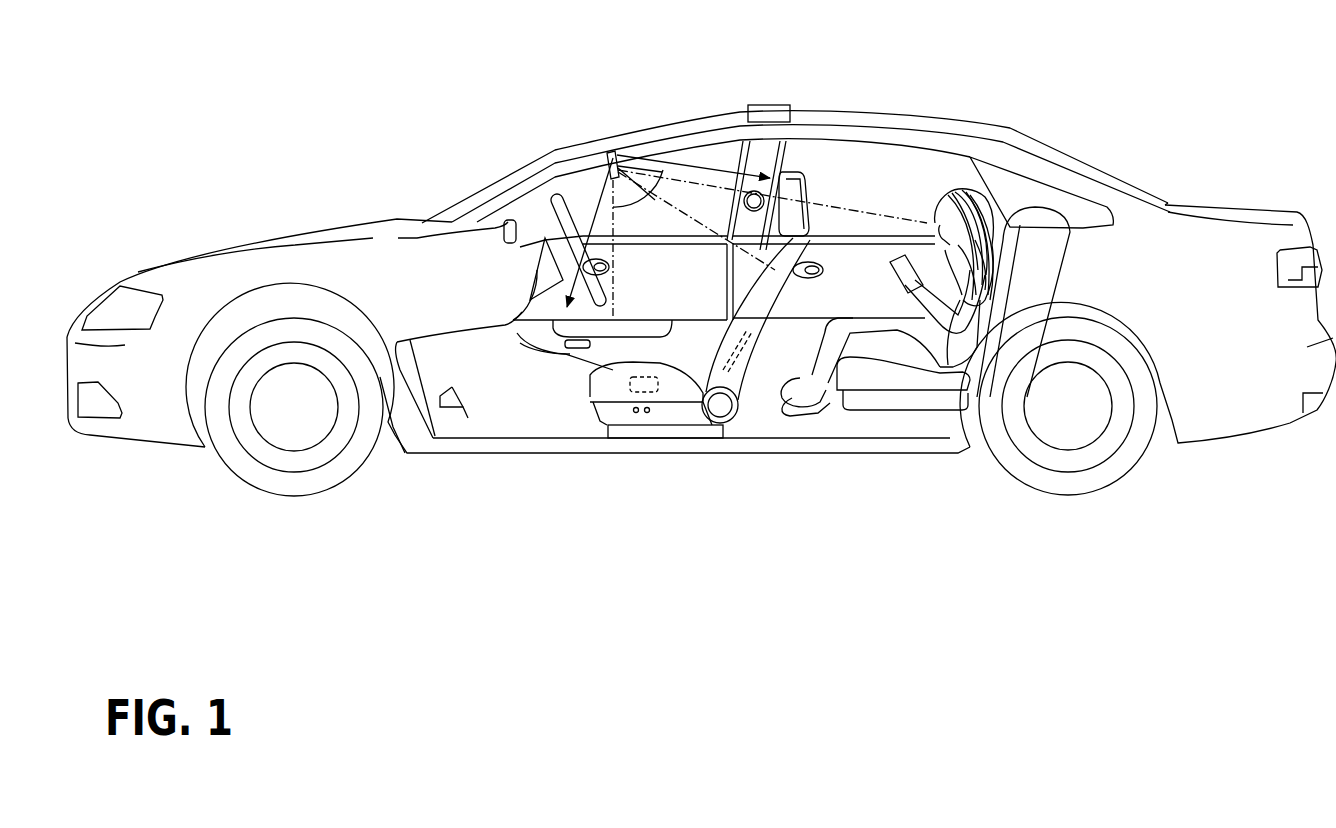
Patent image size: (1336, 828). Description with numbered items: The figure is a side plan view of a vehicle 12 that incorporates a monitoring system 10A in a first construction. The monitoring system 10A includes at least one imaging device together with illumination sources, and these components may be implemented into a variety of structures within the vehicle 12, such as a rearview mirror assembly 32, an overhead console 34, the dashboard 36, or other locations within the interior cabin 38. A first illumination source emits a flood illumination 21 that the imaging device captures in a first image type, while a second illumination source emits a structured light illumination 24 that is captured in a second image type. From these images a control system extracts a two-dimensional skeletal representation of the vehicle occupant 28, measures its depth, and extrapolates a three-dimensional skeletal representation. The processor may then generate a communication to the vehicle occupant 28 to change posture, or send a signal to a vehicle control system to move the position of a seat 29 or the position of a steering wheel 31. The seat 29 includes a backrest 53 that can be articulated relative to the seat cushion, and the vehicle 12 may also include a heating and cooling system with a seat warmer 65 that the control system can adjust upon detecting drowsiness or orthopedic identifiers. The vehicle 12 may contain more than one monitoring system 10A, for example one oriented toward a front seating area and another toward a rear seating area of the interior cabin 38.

The monitoring system 10A is at (771, 100).
The vehicle 12 is at (1010, 123).
The flood illumination 21 is at (618, 152).
The structured light illumination 24 is at (895, 215).
The vehicle occupant 28 is at (950, 187).
The seat 29 is at (680, 327).
The steering wheel 31 is at (537, 263).
The rearview mirror assembly 32 is at (585, 155).
The overhead console 34 is at (700, 152).
The dashboard 36 is at (534, 260).
The interior cabin 38 is at (915, 170).
The backrest 53 is at (1007, 227).
The seat warmer 65 is at (653, 397).